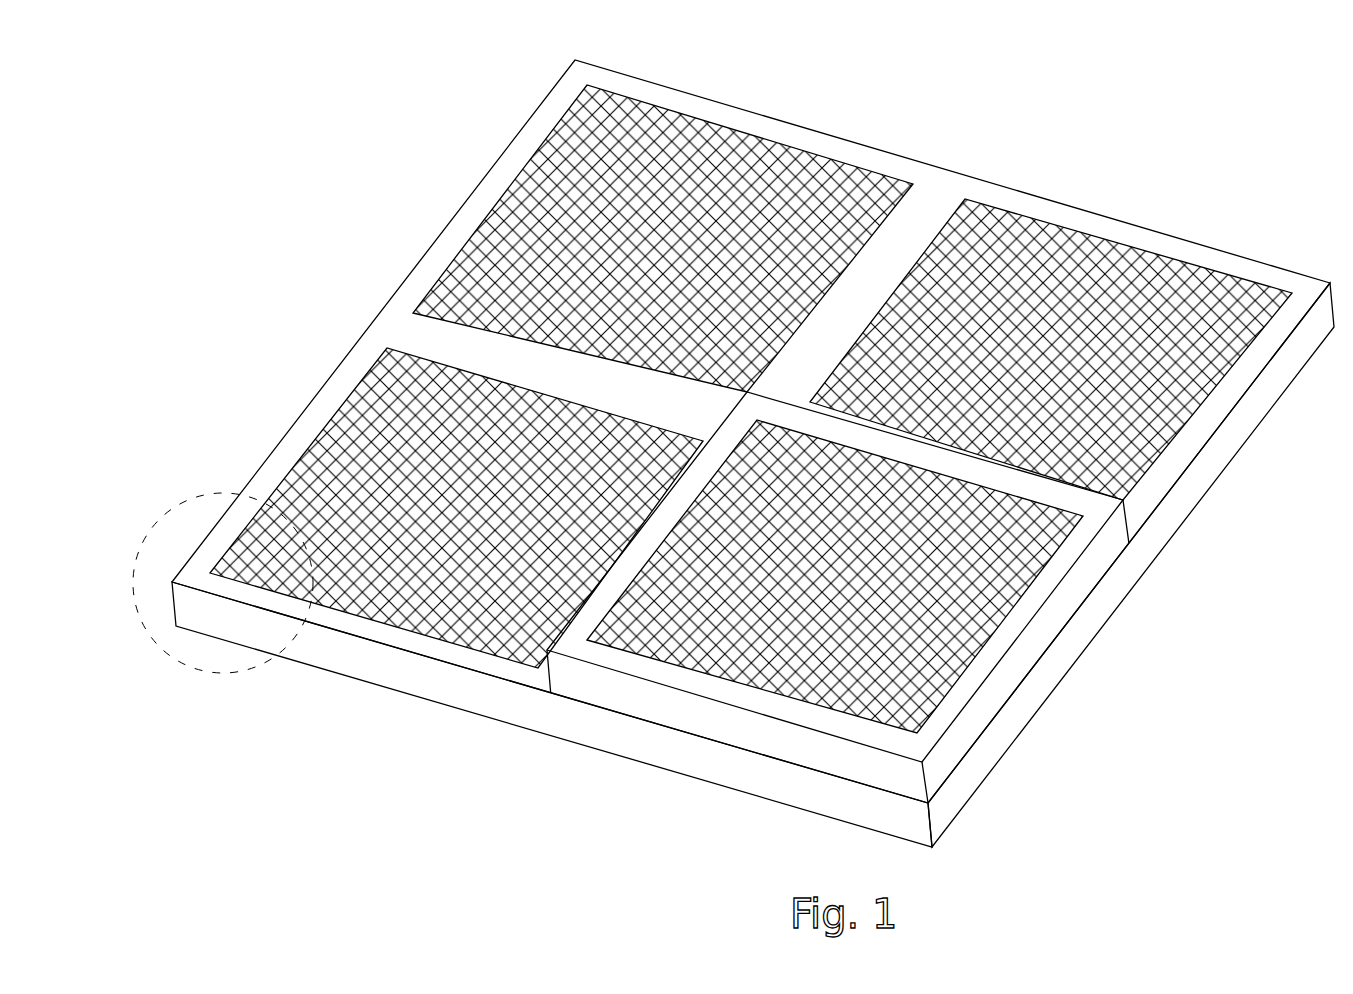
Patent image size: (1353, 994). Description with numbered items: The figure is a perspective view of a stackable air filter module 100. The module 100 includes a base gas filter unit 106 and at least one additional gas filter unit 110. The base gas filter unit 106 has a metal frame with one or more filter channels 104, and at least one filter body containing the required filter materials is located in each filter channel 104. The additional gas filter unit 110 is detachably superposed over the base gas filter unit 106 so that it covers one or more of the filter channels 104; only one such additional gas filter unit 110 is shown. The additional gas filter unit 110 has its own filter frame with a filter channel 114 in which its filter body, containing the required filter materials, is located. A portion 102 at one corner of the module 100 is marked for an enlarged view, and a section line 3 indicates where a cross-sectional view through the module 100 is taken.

The stackable air filter module 100 is at (186, 44).
The portion 102 is at (168, 508).
The filter channel 104 is at (380, 436).
The base gas filter unit 106 is at (1000, 735).
The additional gas filter unit 110 is at (1017, 663).
The filter channel 114 is at (947, 512).
The line 3- 3 is at (1165, 628).